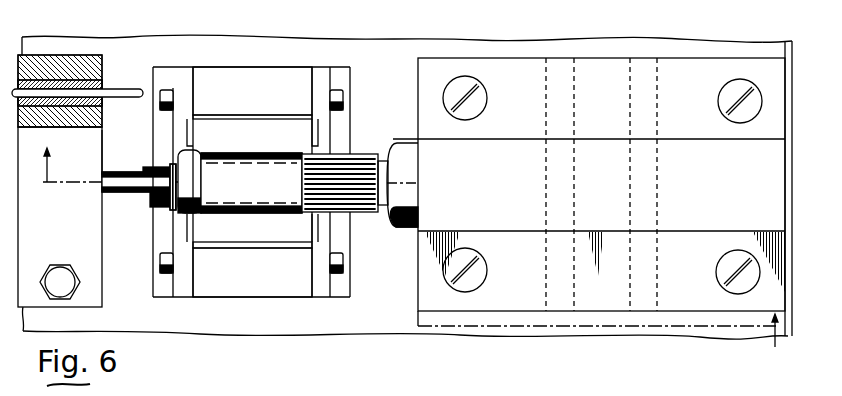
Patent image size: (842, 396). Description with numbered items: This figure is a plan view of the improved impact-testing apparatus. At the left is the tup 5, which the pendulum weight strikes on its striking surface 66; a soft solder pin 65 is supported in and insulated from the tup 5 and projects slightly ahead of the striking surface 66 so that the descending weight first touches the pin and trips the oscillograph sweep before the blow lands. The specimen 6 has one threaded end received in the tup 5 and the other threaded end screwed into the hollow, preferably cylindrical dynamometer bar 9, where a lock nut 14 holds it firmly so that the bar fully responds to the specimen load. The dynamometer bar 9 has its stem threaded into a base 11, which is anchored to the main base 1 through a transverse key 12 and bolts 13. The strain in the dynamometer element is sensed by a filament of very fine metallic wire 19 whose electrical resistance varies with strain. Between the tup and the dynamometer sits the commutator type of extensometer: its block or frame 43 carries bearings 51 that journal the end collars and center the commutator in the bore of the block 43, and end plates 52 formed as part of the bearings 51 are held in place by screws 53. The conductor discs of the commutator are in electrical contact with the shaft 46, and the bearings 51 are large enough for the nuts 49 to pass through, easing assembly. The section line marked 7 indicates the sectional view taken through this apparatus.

The base 1 is at (396, 47).
The tup 5 is at (88, 298).
The specimen 6 is at (125, 179).
The section line 7- 7 is at (409, 247).
The dynamometer bar 9 is at (267, 168).
The base 11 is at (524, 148).
The transverse key 12 is at (545, 189).
The bolts 13 is at (487, 99).
The lock nut 14 is at (193, 158).
The wire 19 is at (337, 168).
The block 43 is at (250, 76).
The shaft 46 is at (146, 166).
The nuts 49 is at (155, 212).
The bearings 51 is at (183, 141).
The end plates 52 is at (178, 97).
The screws 53 is at (167, 90).
The solder pin 65 is at (122, 94).
The tup striking surface 66 is at (103, 141).